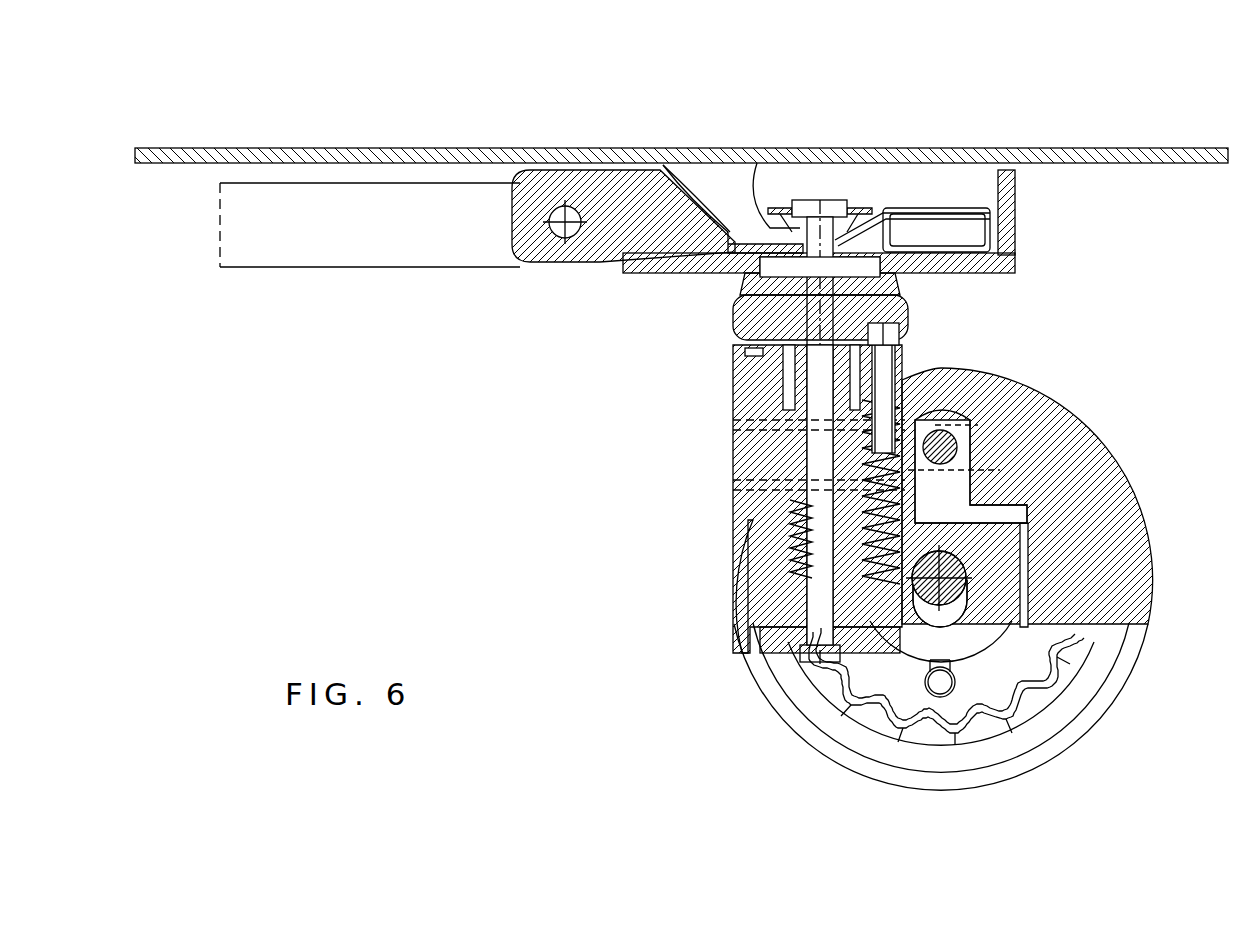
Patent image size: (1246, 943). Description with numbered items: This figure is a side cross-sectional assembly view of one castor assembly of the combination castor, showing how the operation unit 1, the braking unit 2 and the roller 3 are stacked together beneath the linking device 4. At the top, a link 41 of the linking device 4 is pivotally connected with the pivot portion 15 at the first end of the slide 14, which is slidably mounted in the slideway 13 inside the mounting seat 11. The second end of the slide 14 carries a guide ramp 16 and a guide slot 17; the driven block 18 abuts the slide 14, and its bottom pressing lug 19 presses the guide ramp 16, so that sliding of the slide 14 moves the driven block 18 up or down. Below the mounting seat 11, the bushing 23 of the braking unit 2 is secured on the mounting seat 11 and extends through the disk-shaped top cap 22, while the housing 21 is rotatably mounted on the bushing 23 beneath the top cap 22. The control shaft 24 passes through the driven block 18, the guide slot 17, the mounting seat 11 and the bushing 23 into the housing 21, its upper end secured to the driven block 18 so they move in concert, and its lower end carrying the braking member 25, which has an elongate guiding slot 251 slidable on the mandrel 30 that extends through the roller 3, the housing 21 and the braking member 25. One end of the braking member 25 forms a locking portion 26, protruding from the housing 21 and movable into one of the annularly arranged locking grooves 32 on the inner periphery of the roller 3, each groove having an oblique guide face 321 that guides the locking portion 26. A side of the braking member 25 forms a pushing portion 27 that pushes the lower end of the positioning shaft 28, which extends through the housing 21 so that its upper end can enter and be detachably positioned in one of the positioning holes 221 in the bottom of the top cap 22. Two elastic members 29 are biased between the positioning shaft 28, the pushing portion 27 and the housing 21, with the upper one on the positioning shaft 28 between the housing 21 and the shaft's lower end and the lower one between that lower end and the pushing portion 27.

The operation unit 1 is at (995, 88).
The mounting seat 11 is at (1018, 240).
The slideway 13 is at (1000, 204).
The slide 14 is at (730, 247).
The pivot portion 15 is at (590, 187).
The guide ramp 16 is at (875, 210).
The guide slot 17 is at (933, 230).
The driven block 18 is at (783, 210).
The pressing lug 19 is at (757, 227).
The braking unit 2 is at (565, 480).
The housing 21 is at (1090, 435).
The top cap 22 is at (733, 325).
The positioning holes 221 is at (890, 320).
The bushing 23 is at (740, 388).
The control shaft 24 is at (813, 207).
The braking member 25 is at (1070, 525).
The elongate guiding slot 251 is at (985, 650).
The locking portion 26 is at (1060, 482).
The pushing portion 27 is at (770, 540).
The positioning shaft 28 is at (890, 362).
The elastic members 29 is at (740, 426).
The roller 3 is at (685, 752).
The mandrel 30 is at (900, 672).
The locking grooves 32 is at (870, 700).
The oblique guide face 321 is at (930, 730).
The linking device 4 is at (370, 302).
The links 41 is at (328, 248).